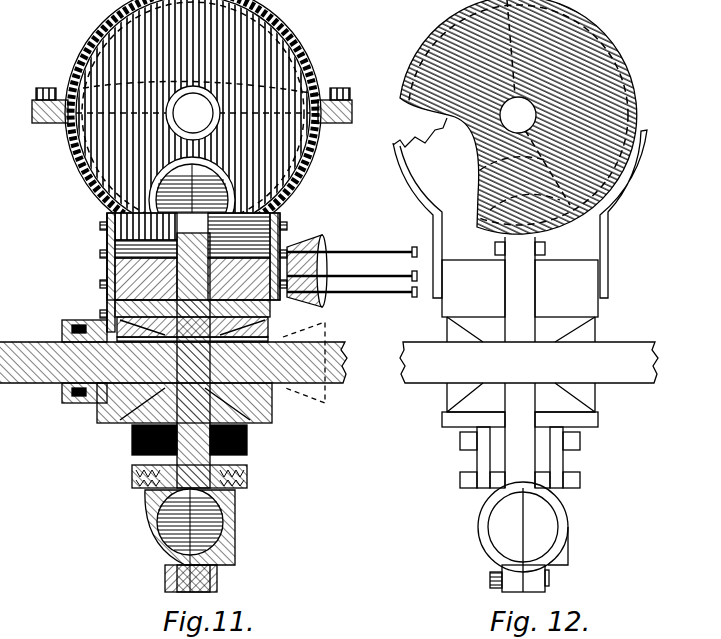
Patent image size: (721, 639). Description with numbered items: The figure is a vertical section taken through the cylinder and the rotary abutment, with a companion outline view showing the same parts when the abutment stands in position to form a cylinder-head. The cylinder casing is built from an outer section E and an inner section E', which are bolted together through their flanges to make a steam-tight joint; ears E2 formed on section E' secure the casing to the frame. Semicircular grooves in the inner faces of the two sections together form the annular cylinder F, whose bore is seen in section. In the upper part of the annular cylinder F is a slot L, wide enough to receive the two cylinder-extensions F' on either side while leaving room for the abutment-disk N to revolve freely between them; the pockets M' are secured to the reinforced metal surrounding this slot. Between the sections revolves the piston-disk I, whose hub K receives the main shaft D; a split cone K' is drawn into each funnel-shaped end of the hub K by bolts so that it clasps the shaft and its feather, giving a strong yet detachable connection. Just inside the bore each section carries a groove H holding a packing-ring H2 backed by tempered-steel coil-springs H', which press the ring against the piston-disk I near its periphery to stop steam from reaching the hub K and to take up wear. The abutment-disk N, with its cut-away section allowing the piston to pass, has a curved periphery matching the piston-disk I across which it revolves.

In FIG. 11, the abutment-disk N is at (200, 52).
In FIG. 12, the abutment-disk N is at (548, 56).
In FIG. 11, the outer section of the annular cylinder E is at (135, 200).
In FIG. 12, the outer section of the annular cylinder E is at (523, 537).
In FIG. 11, the inner section of the annular cylinder E' is at (295, 256).
In FIG. 11, the ears E2 is at (85, 396).
In FIG. 11, the pockets M' is at (181, 272).
In FIG. 11, the slot L is at (164, 408).
In FIG. 12, the slot L is at (520, 362).
In FIG. 11, the piston-disk I is at (193, 272).
In FIG. 12, the piston-disk I is at (520, 272).
In FIG. 11, the hub K is at (257, 329).
In FIG. 12, the hub K is at (521, 364).
In FIG. 11, the cone K' is at (304, 373).
In FIG. 11, the main shaft D is at (173, 362).
In FIG. 12, the main shaft D is at (529, 362).
In FIG. 12, the groove H is at (520, 247).
In FIG. 11, the coil-springs H' is at (198, 479).
In FIG. 11, the packing-ring H2 is at (158, 476).
In FIG. 12, the packing-ring H2 is at (490, 490).
In FIG. 11, the annular cylinder F is at (166, 526).
In FIG. 11, the cylinder-extension F' is at (215, 541).